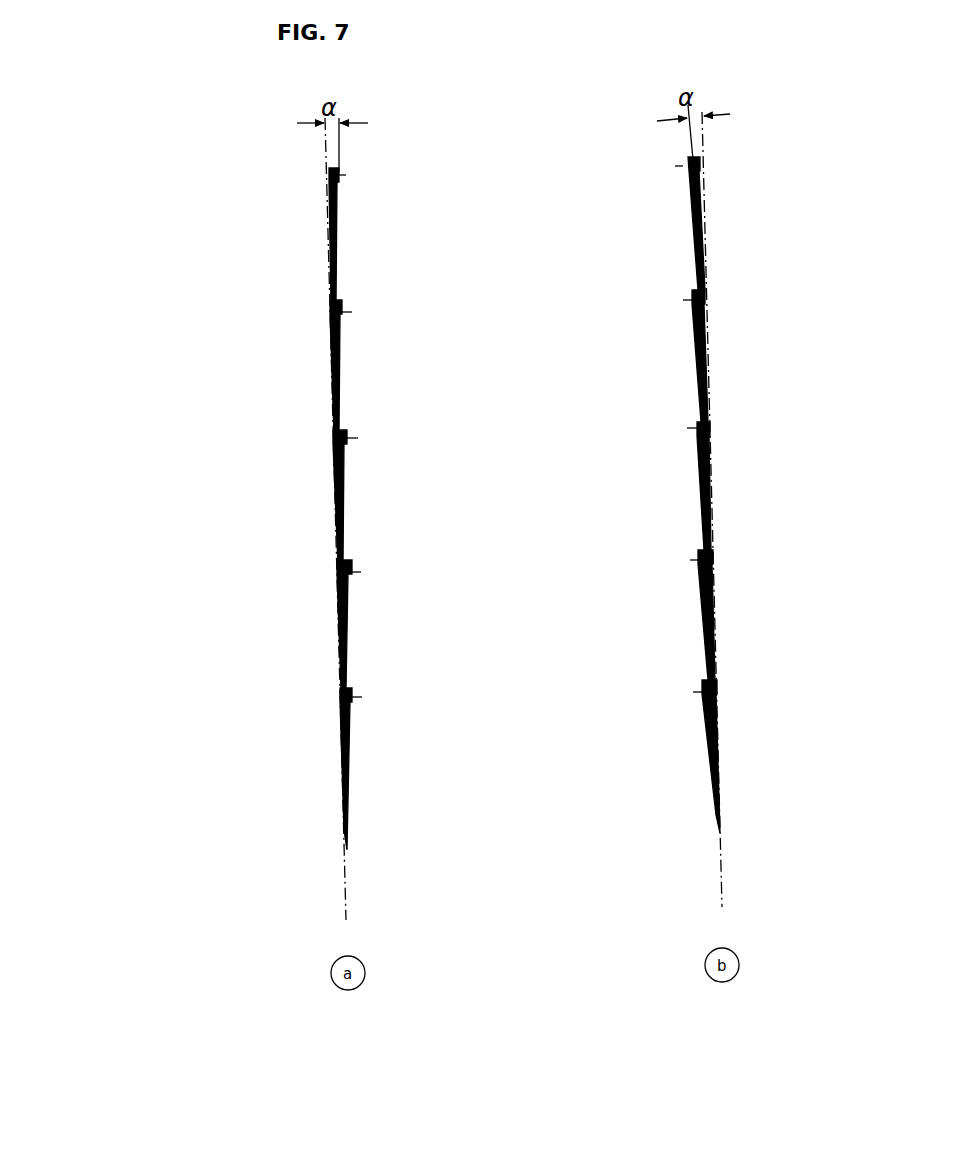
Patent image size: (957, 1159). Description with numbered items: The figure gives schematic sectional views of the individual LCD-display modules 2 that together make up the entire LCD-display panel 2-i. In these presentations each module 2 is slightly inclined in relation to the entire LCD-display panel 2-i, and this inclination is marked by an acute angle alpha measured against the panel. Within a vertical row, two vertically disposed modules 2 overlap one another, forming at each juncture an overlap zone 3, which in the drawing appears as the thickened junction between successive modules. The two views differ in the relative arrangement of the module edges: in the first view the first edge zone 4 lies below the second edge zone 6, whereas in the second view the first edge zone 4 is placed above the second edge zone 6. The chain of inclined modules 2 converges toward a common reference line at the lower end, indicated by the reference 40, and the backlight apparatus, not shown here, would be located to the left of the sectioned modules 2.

In FIG. 7a, the LCD-display module 2 is at (342, 358).
In FIG. 7b, the LCD-display module 2 is at (688, 320).
In FIG. 7a, the LCD-display panel 2-i is at (194, 584).
In FIG. 7b, the LCD-display panel 2-i is at (782, 578).
In FIG. 7a, the overlap zone 3 is at (368, 438).
In FIG. 7b, the overlap zone 3 is at (672, 428).
In FIG. 7a, the first edge zone 4 is at (321, 317).
In FIG. 7b, the first edge zone 4 is at (666, 168).
In FIG. 7a, the second edge zone 6 is at (349, 170).
In FIG. 7b, the second edge zone 6 is at (718, 293).
In FIG. 7a, the pivot axis 40 is at (345, 890).
In FIG. 7b, the pivot axis 40 is at (720, 878).